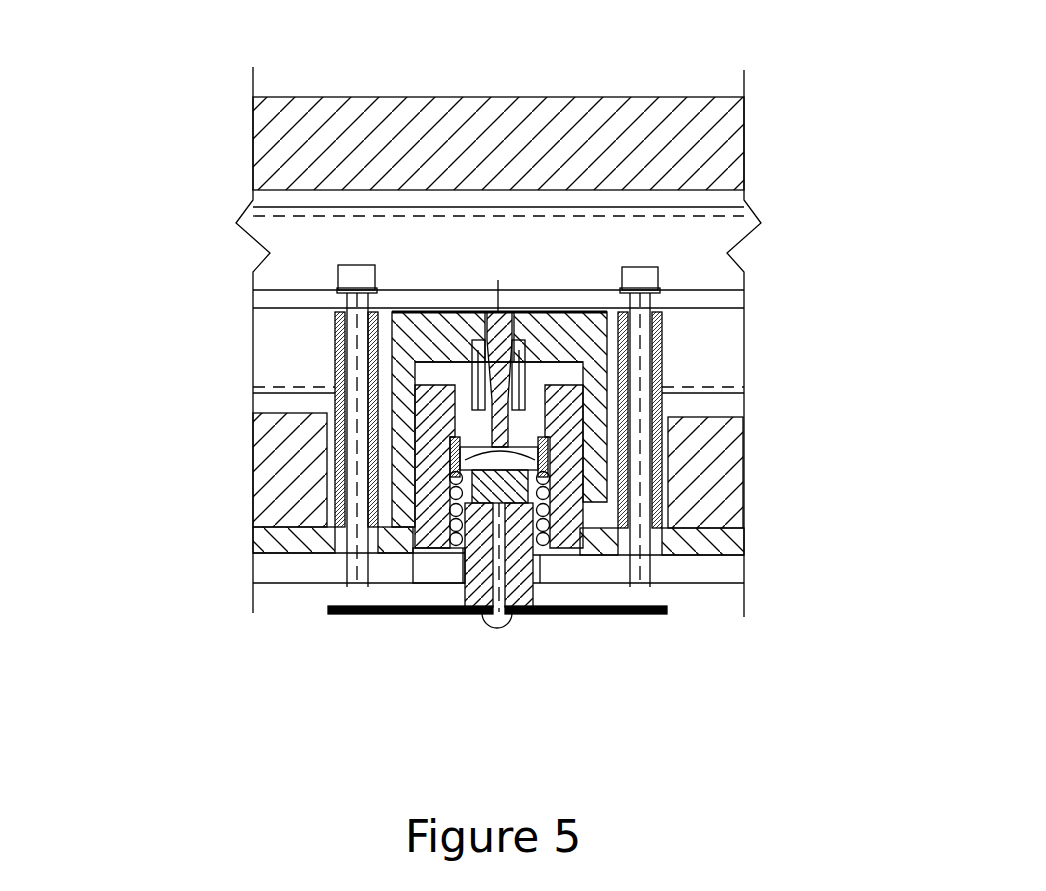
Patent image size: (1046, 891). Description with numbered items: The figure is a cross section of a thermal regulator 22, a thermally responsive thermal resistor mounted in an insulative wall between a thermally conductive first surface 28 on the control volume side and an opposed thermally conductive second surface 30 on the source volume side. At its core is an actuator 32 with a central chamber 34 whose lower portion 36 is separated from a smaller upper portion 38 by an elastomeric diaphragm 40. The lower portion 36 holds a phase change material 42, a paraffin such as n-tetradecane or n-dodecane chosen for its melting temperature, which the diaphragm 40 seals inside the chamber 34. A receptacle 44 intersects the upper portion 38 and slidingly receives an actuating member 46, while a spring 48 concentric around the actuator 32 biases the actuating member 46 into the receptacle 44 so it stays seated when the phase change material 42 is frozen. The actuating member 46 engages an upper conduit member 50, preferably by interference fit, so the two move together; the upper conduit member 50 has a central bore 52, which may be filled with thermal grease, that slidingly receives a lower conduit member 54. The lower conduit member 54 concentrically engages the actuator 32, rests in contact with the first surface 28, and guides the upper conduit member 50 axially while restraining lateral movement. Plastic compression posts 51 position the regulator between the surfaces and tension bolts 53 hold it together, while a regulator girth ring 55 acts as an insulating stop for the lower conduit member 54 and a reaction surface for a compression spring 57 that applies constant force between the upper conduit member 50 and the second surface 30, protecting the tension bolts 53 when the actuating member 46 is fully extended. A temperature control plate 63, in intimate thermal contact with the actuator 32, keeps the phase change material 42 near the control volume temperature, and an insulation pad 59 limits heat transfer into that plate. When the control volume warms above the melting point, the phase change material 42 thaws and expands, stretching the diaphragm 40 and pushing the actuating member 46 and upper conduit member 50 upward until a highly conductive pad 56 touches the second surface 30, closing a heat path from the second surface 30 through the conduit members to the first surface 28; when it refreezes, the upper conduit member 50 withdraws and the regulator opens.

The thermal regulator 22 is at (297, 440).
The thermally conductive first surface 28 is at (727, 530).
The thermally conductive second surface 30 is at (397, 308).
The actuator 32 is at (486, 610).
The central chamber 34 is at (533, 540).
The lower portion 36 is at (455, 548).
The upper portion 38 is at (450, 437).
The elastomeric diaphragm 40 is at (572, 450).
The phase change material 42 is at (480, 535).
The receptacle 44 is at (537, 362).
The actuating member 46 is at (470, 365).
The spring 48 is at (518, 342).
The upper conduit member 50 is at (550, 312).
The plastic compression posts 51 is at (643, 523).
The central bore 52 is at (480, 405).
The tension bolts 53 is at (727, 522).
The lower conduit member 54 is at (553, 462).
The regulator girth ring 55 is at (560, 492).
The thermally conductive pad 56 is at (460, 310).
The compression spring 57 is at (538, 492).
The insulation pad 59 is at (677, 582).
The temperature control plate 63 is at (532, 617).